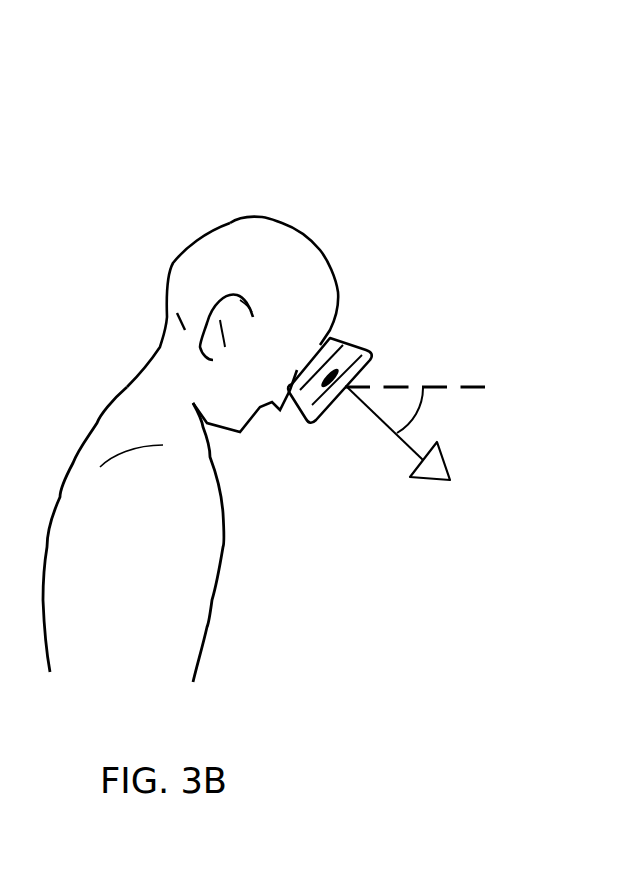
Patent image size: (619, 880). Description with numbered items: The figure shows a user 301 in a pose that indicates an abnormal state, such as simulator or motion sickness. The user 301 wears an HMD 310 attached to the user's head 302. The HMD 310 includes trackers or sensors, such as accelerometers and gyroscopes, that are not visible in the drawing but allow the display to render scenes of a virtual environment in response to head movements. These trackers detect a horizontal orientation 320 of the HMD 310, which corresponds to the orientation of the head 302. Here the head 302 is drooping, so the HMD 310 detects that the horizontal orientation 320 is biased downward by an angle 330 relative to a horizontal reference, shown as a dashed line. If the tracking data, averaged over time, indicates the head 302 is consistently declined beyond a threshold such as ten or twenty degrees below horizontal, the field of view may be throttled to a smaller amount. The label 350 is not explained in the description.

The user 301 is at (240, 172).
The head 302 is at (290, 288).
The HMD 310 is at (382, 323).
The horizontal orientation 320 is at (393, 471).
The angle 330 is at (436, 417).
The usage scenario 350 is at (344, 80).